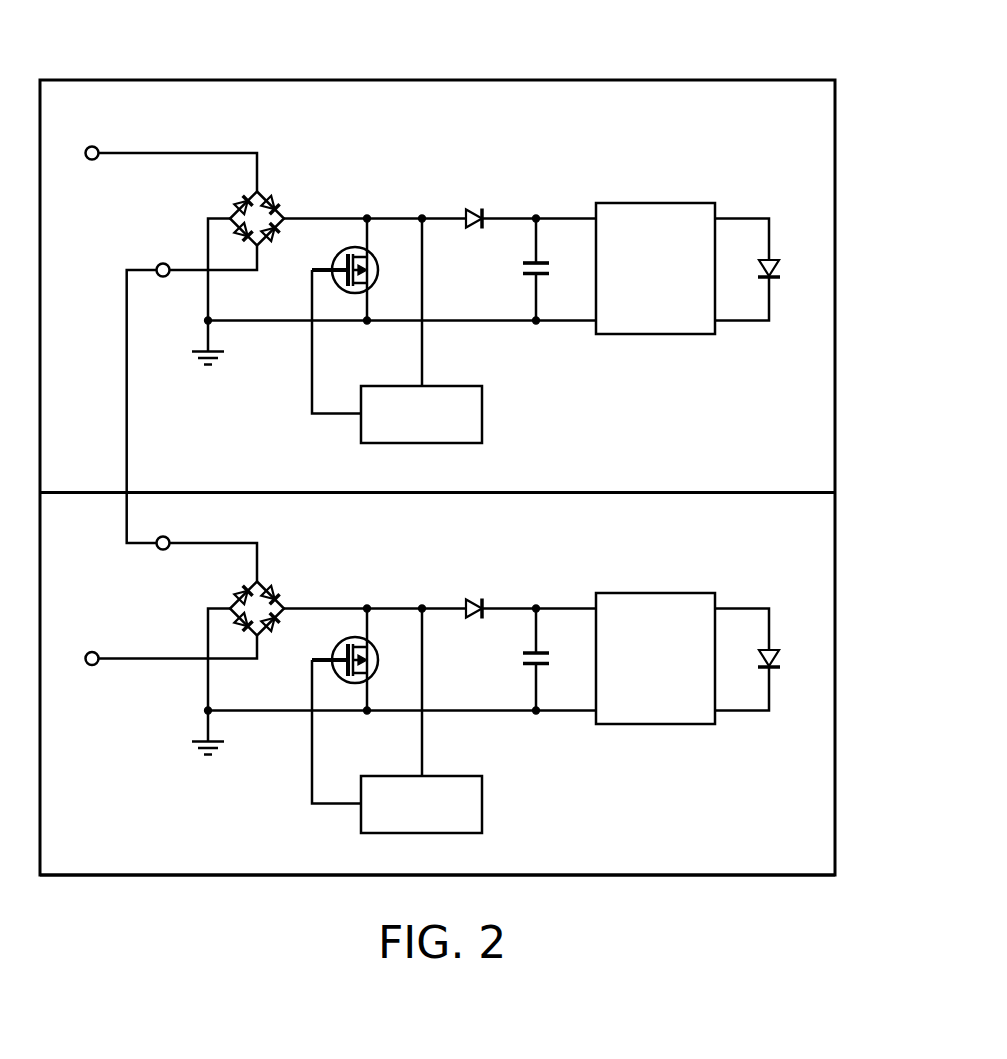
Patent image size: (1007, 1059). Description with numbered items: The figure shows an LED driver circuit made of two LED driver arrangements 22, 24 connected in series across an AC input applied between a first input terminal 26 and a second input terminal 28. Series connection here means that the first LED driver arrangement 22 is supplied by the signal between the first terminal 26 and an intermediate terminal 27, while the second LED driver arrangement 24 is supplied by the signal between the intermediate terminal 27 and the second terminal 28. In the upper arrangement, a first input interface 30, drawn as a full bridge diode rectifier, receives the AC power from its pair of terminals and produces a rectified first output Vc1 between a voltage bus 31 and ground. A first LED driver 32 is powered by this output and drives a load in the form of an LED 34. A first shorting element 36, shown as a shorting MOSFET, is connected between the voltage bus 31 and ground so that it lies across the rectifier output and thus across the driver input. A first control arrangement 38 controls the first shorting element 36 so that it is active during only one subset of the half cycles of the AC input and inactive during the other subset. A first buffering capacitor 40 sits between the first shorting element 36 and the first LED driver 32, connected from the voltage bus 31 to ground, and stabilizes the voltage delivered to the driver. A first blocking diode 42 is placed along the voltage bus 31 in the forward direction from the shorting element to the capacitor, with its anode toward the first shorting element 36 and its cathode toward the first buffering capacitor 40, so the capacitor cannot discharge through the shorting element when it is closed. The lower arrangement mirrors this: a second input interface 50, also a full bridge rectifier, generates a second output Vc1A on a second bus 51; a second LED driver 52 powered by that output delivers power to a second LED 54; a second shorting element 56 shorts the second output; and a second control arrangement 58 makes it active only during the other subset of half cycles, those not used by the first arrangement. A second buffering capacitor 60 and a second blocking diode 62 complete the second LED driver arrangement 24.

The first LED driver arrangement 22 is at (722, 80).
The second LED driver arrangement 24 is at (731, 876).
The first input terminal 26 is at (92, 146).
The intermediate terminal 27 is at (126, 360).
The second input terminal 28 is at (92, 652).
The first input interface 30 is at (272, 201).
The voltage bus 31 is at (333, 212).
The first LED driver 32 is at (655, 268).
The LED 34 is at (777, 270).
The first shorting element 36 is at (343, 251).
The first control arrangement 38 is at (397, 329).
The first buffering capacitor 40 is at (522, 266).
The first blocking diode 42 is at (478, 210).
The second input interface 50 is at (272, 591).
The second bus 51 is at (333, 602).
The second LED driver 52 is at (655, 658).
The second LED 54 is at (777, 660).
The second shorting element 56 is at (343, 641).
The second control arrangement 58 is at (397, 719).
The second buffering capacitor 60 is at (522, 656).
The second blocking diode 62 is at (478, 600).